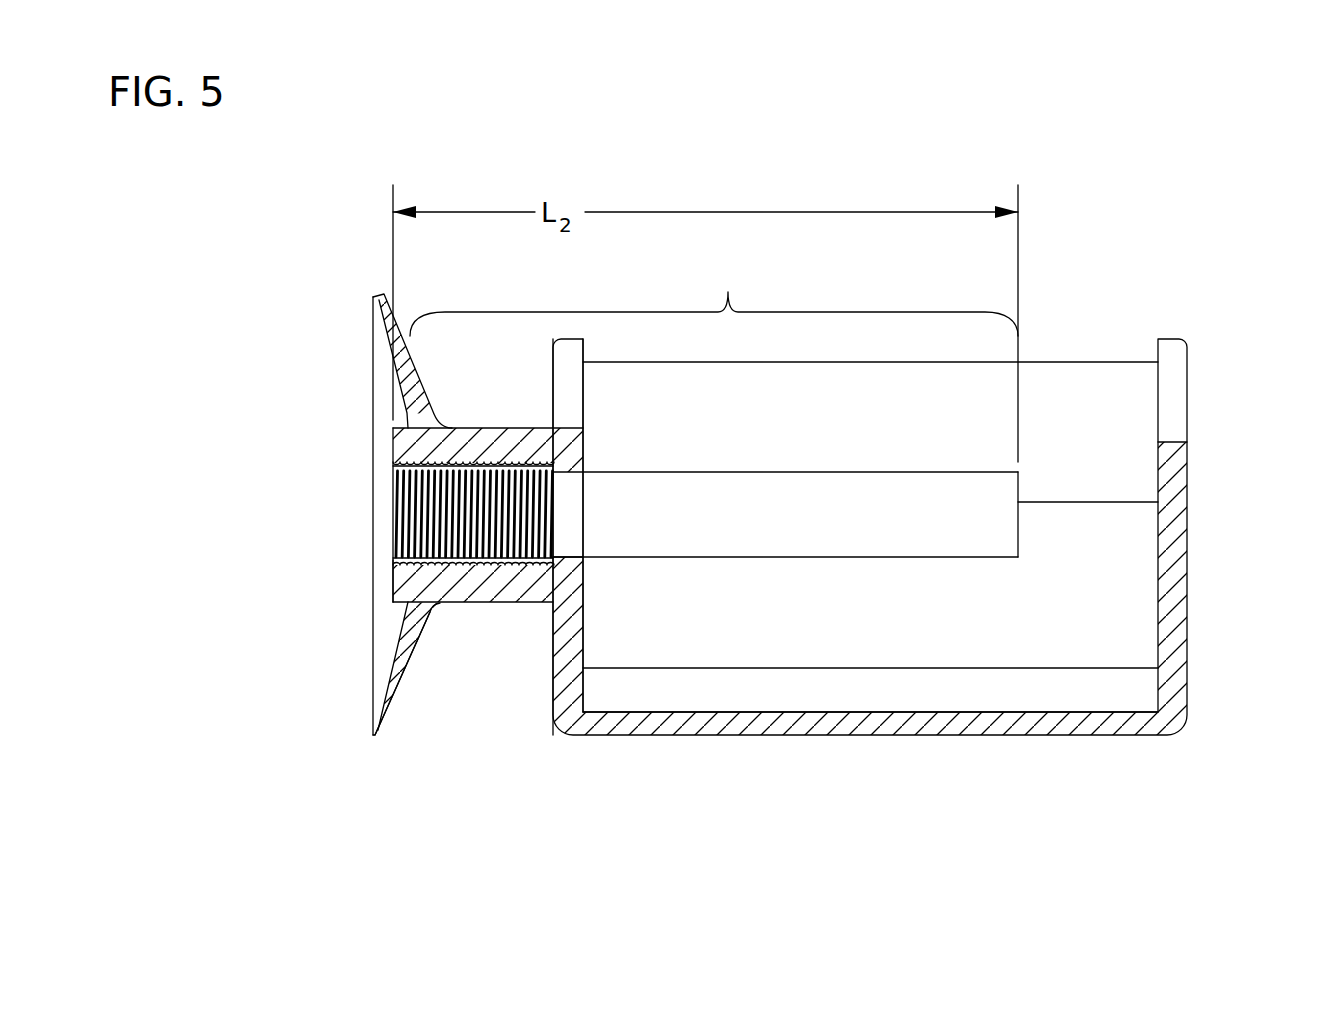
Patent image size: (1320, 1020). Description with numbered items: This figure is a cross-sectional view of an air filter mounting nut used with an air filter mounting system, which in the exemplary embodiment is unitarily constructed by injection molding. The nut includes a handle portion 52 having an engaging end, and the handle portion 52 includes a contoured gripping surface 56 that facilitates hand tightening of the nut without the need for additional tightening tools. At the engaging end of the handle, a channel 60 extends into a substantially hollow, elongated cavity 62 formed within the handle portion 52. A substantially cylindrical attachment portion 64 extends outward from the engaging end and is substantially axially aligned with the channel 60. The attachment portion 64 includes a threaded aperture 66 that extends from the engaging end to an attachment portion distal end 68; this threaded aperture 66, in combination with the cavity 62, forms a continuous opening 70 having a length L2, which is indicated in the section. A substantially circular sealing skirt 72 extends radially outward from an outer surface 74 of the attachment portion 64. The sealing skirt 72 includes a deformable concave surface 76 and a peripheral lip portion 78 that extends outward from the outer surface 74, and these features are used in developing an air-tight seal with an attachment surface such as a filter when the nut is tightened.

The handle portion 52 is at (560, 768).
The contoured gripping surface 56 is at (1132, 722).
The channel 60 is at (571, 542).
The elongated cavity 62 is at (973, 557).
The attachment portion 64 is at (442, 603).
The threaded aperture 66 is at (432, 527).
The attachment portion distal end 68 is at (394, 594).
The continuous opening 70 is at (714, 297).
The sealing skirt 72 is at (400, 693).
The outer surface 74 is at (505, 428).
The deformable concave surface 76 is at (378, 407).
The peripheral lip portion 78 is at (392, 338).